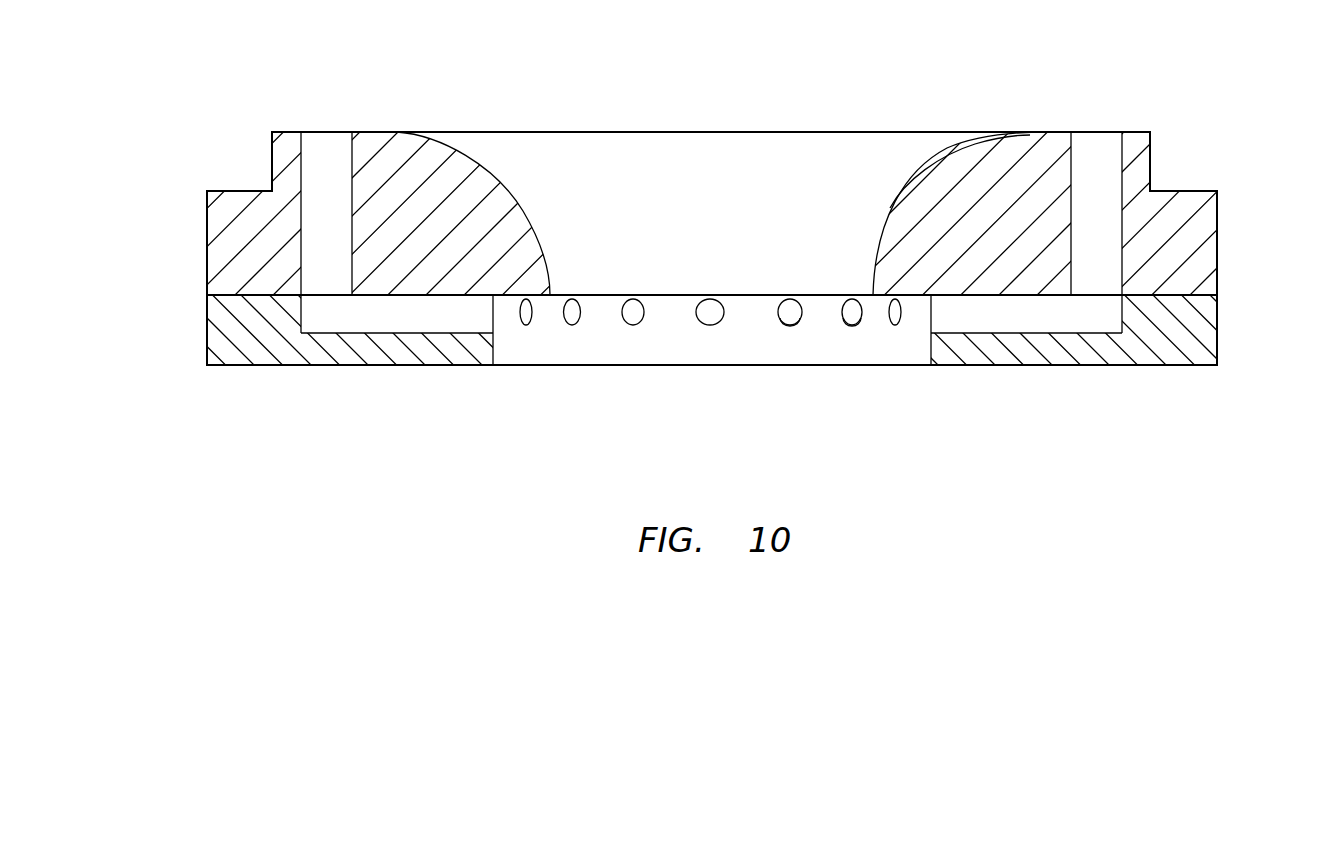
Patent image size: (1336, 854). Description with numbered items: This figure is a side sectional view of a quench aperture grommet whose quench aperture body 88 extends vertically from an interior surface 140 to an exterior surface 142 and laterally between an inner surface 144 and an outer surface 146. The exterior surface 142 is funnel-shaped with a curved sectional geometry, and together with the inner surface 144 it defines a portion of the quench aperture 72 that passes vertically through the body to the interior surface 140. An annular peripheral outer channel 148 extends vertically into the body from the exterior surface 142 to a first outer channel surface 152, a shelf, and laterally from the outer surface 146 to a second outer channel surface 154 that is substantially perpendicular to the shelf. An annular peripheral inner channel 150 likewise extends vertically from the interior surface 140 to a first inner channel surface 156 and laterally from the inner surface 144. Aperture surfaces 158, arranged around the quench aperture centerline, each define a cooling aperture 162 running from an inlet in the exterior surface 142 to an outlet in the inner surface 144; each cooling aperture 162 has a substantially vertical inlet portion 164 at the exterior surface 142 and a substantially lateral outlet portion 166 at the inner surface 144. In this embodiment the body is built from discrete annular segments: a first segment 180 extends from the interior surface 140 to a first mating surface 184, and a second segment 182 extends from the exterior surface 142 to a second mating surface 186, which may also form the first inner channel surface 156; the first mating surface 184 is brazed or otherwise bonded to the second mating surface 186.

The quench aperture body 88 is at (1158, 72).
The quench aperture 72 is at (790, 158).
The exterior surface 142 is at (997, 137).
The cooling aperture 162 is at (325, 152).
The second outer channel surface 154 is at (1150, 143).
The annular peripheral outer channel 148 is at (1190, 157).
The first outer channel surface 152 is at (1212, 188).
The outer surface 146 is at (1217, 243).
The inlet portion 164 is at (1097, 253).
The second segment 182 is at (207, 247).
The first mating surface 184 is at (263, 292).
The first segment 180 is at (207, 333).
The second mating surface 186 is at (246, 292).
The inner surface 144 is at (497, 350).
The annular peripheral inner channel 150 is at (517, 345).
The first inner channel surface 156 is at (542, 297).
The aperture surface 158 is at (862, 325).
The interior surface 140 is at (1008, 365).
The outlet portion 166 is at (1040, 315).